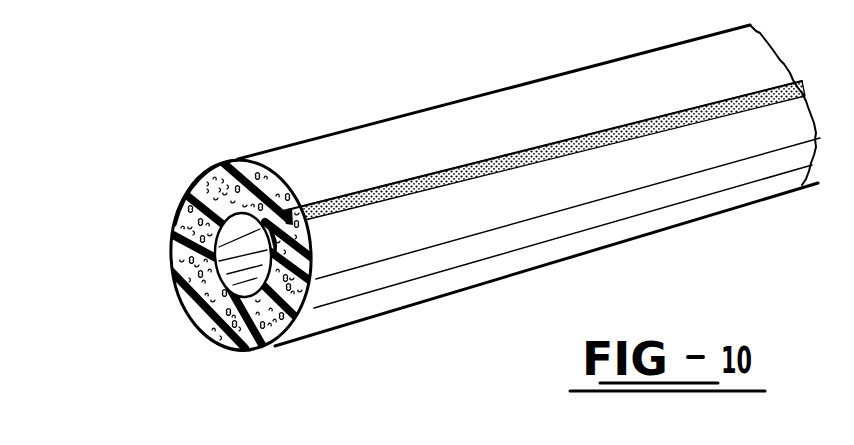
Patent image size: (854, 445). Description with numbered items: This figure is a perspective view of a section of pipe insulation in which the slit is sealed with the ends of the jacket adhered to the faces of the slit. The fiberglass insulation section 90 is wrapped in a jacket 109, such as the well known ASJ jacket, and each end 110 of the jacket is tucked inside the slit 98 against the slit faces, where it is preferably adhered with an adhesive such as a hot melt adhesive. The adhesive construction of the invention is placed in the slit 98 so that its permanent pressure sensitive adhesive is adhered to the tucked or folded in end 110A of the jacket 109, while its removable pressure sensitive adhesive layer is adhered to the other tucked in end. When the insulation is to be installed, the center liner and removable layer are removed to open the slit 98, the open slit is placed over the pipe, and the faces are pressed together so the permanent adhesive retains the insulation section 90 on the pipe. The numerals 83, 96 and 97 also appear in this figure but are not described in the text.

The tubular catheter body 83 is at (610, 180).
The fiberglass insulation section 90 is at (185, 287).
The reinforcing braid layer 96 is at (208, 161).
The central lumen 97 is at (243, 229).
The slit 98 is at (316, 222).
The jacket 109 is at (230, 348).
The end of the jacket 110 is at (287, 206).
The tucked or folded in end of the jacket 110A is at (289, 204).